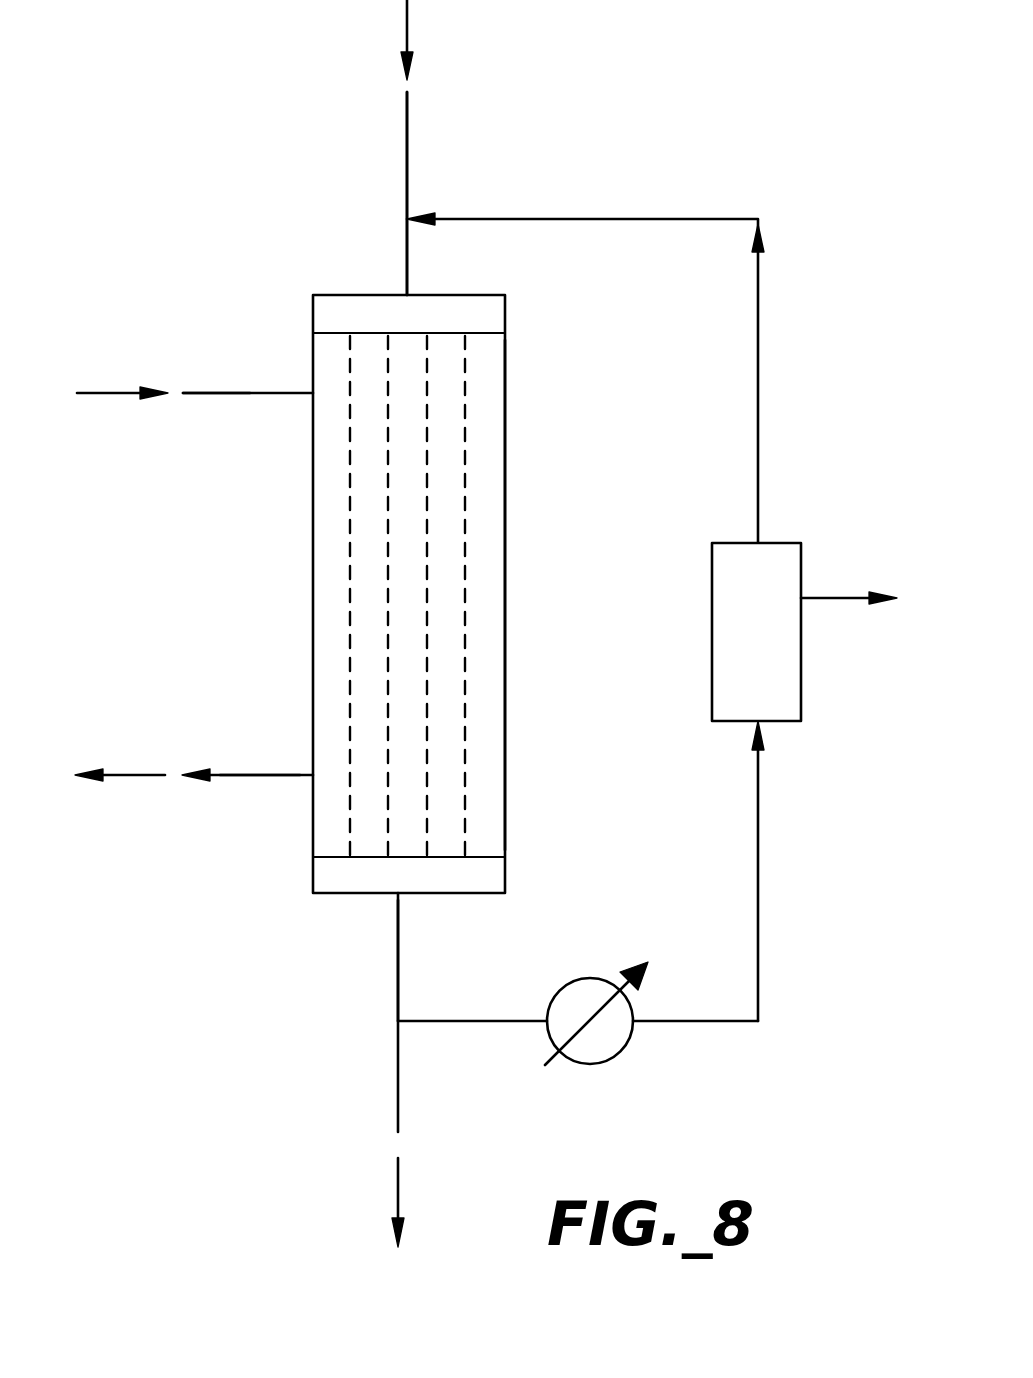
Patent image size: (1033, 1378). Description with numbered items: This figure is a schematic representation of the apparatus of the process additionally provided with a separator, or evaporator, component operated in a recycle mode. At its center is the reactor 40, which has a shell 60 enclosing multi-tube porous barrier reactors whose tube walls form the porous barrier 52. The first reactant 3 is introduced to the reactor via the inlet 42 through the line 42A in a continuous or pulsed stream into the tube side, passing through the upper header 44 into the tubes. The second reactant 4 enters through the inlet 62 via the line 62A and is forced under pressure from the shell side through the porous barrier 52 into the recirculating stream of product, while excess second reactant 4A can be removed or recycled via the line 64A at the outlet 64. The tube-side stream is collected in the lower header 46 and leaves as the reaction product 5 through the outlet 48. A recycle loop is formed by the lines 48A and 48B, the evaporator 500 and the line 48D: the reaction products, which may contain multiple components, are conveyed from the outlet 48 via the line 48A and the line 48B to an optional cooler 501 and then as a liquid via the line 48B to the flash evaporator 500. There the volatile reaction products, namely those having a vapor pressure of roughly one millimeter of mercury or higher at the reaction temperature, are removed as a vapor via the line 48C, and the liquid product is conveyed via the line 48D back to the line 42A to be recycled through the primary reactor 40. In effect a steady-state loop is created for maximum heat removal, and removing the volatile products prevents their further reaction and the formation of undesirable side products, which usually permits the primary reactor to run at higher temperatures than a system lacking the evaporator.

The first reactant 3 is at (407, 0).
The second reactant 4 is at (98, 393).
The second reactant stream 4A is at (128, 772).
The reaction product 5 is at (398, 1207).
The reactor 40 is at (524, 408).
The inlet 42 is at (406, 293).
The line 42A is at (407, 147).
The upper header 44 is at (323, 325).
The lower header 46 is at (487, 873).
The outlet 48 is at (396, 894).
The line 48A is at (400, 975).
The line 48B is at (758, 888).
The line 48C is at (832, 597).
The line 48D is at (758, 465).
The porous barrier 52 is at (465, 787).
The shell 60 is at (505, 500).
The inlet 62 is at (312, 392).
The line 62A is at (225, 394).
The outlet 64 is at (312, 775).
The line 64A is at (236, 777).
The evaporator 500 is at (802, 695).
The cooler 501 is at (635, 1033).